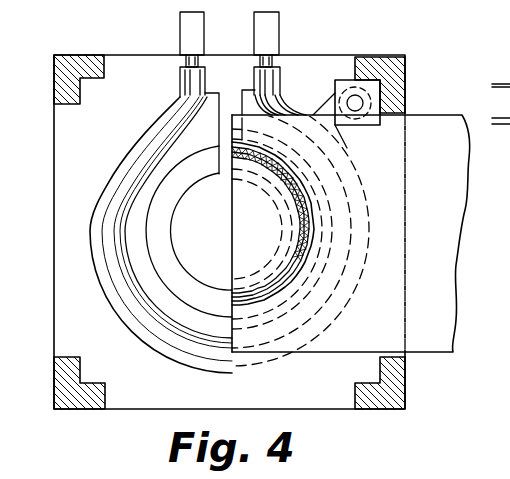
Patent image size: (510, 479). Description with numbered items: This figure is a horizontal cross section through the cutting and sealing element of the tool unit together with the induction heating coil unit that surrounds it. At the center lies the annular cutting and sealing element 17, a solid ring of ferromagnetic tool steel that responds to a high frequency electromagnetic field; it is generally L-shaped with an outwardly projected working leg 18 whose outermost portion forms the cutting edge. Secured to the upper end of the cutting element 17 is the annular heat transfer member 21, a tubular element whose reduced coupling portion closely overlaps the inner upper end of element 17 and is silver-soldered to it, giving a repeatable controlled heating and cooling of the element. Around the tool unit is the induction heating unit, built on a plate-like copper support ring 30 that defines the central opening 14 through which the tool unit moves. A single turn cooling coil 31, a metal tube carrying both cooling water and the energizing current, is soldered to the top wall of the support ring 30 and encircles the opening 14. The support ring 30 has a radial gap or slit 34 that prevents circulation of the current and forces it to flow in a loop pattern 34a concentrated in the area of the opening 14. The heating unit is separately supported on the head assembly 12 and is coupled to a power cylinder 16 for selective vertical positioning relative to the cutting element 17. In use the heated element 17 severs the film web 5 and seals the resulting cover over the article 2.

The head assembly 12 is at (55, 87).
The support ring 30 is at (127, 135).
The radial gap or slit 34 is at (219, 94).
The loop pattern 34a is at (333, 222).
The working leg 18 is at (238, 150).
The annular cutting and sealing element 17 is at (262, 160).
The annular heat transfer member 21 is at (288, 205).
The single turn cooling coil 31 is at (117, 231).
The article 2 is at (250, 265).
The power cylinder 16 is at (341, 77).
The opening 14 is at (322, 253).
The film strip or web 5 is at (440, 307).